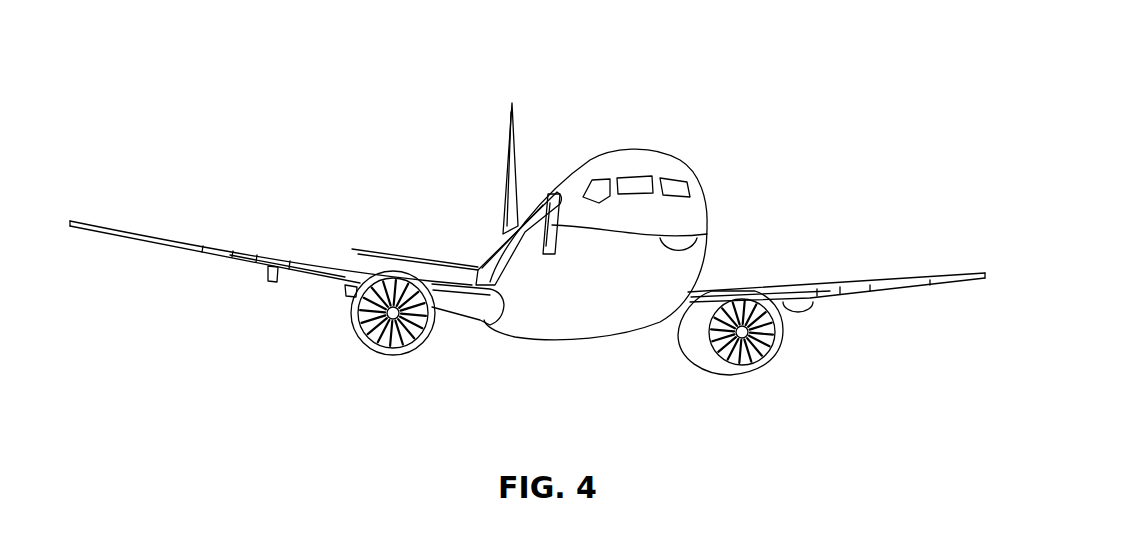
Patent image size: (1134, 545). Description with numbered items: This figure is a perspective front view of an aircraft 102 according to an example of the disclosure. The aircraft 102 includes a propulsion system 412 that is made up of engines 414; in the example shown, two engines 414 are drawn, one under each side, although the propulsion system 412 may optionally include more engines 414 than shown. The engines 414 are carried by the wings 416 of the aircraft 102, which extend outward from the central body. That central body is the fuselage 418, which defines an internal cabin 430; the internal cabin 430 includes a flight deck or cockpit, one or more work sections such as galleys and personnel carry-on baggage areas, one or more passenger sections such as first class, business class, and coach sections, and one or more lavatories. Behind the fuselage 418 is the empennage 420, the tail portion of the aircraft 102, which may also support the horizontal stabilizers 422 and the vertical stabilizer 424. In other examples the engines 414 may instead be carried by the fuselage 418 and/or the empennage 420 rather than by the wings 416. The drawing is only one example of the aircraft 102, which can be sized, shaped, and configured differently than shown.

The aircraft 102 is at (297, 104).
The propulsion system 412 is at (328, 336).
The engines 414 is at (388, 354).
The wings 416 is at (195, 243).
The fuselage 418 is at (707, 207).
The empennage 420 is at (500, 232).
The horizontal stabilizers 422 is at (385, 253).
The vertical stabilizer 424 is at (507, 140).
The internal cabin 430 is at (637, 183).